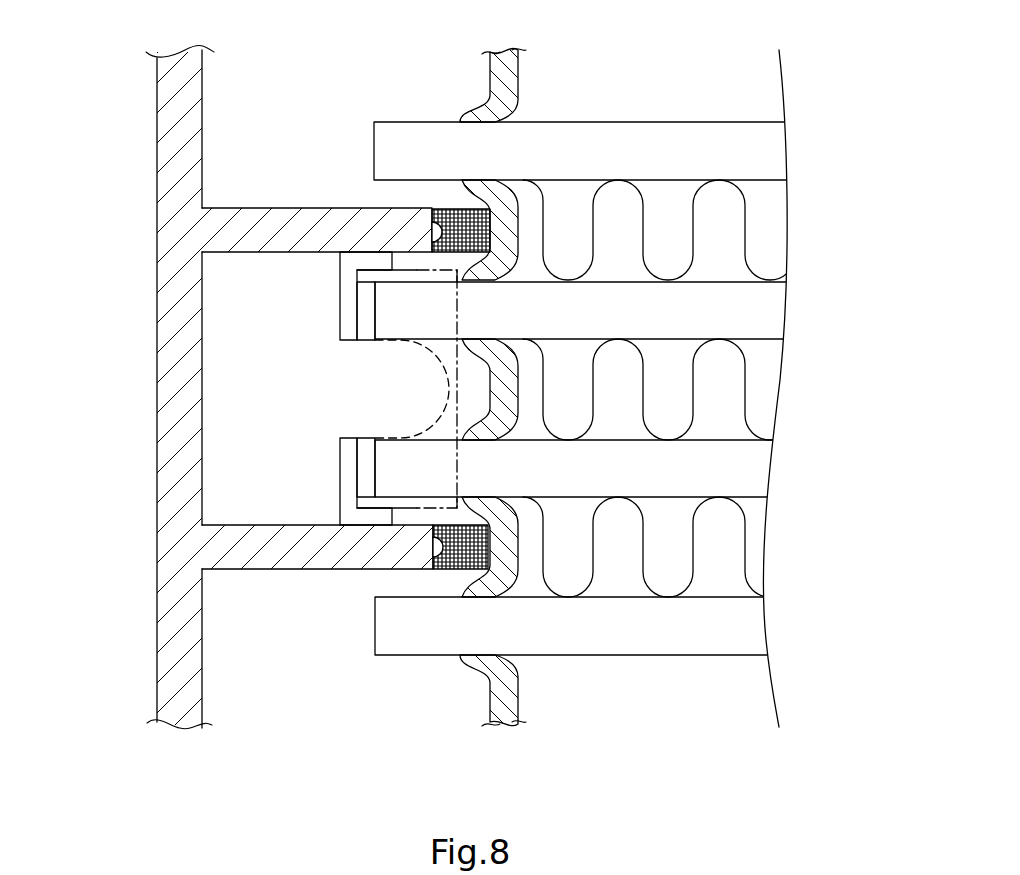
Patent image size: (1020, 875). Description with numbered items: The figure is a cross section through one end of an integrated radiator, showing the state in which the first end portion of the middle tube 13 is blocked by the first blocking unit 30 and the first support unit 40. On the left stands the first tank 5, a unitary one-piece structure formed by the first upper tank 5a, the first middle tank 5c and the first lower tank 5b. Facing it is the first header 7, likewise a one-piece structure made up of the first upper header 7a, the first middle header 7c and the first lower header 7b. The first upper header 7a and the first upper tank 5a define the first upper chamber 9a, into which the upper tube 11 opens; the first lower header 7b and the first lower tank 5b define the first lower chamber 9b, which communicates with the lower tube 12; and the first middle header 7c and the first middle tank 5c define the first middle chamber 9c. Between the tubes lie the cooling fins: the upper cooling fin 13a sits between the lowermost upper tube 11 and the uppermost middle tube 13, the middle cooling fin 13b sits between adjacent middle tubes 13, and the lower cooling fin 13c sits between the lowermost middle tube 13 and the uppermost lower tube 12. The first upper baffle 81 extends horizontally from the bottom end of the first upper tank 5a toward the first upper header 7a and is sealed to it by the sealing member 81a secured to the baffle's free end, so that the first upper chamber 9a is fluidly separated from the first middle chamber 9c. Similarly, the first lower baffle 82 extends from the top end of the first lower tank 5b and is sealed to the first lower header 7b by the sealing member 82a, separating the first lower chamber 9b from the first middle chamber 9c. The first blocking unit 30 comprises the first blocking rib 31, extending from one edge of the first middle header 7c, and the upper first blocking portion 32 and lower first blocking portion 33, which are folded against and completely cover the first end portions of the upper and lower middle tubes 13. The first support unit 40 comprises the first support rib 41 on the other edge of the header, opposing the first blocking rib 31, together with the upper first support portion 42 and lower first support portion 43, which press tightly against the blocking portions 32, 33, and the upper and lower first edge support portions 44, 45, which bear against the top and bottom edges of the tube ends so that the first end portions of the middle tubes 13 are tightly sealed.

The first tank 5 is at (142, 80).
The first upper tank 5a is at (177, 125).
The first lower tank 5b is at (178, 648).
The first middle tank 5c is at (176, 386).
The first header 7 is at (626, 387).
The first upper header 7a is at (490, 68).
The first lower header 7b is at (495, 700).
The first middle header 7c is at (518, 388).
The first upper chamber 9a is at (258, 133).
The first lower chamber 9b is at (260, 663).
The first middle chamber 9c is at (234, 423).
The upper tube 11 is at (756, 150).
The lower tube 12 is at (756, 626).
The middle tube 13 is at (756, 308).
The upper cooling fin 13a is at (752, 228).
The middle cooling fin 13b is at (752, 384).
The lower cooling fin 13c is at (752, 548).
The first blocking unit 30 is at (365, 389).
The first blocking rib 31 is at (360, 343).
The upper first blocking portion 32 is at (364, 304).
The lower first blocking portion 33 is at (364, 469).
The first support unit 40 is at (345, 389).
The first support rib 41 is at (452, 389).
The upper first support portion 42 is at (344, 273).
The lower first support portion 43 is at (344, 499).
The upper first edge support portion 44 is at (367, 251).
The lower first edge support portion 45 is at (361, 528).
The first upper baffle 81 is at (287, 232).
The sealing member 81a is at (461, 222).
The first lower baffle 82 is at (287, 549).
The sealing member 82a is at (462, 557).